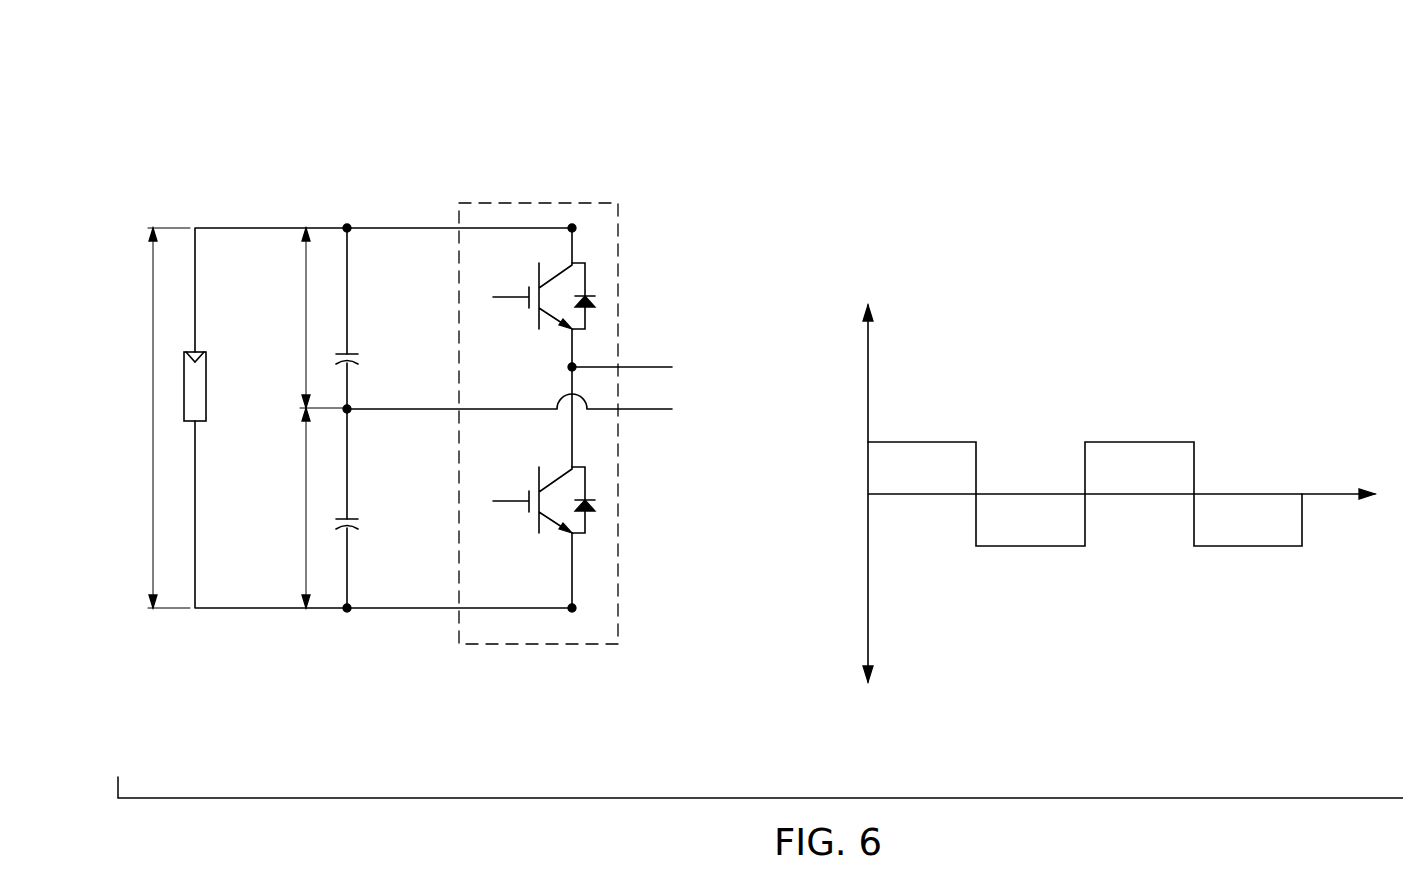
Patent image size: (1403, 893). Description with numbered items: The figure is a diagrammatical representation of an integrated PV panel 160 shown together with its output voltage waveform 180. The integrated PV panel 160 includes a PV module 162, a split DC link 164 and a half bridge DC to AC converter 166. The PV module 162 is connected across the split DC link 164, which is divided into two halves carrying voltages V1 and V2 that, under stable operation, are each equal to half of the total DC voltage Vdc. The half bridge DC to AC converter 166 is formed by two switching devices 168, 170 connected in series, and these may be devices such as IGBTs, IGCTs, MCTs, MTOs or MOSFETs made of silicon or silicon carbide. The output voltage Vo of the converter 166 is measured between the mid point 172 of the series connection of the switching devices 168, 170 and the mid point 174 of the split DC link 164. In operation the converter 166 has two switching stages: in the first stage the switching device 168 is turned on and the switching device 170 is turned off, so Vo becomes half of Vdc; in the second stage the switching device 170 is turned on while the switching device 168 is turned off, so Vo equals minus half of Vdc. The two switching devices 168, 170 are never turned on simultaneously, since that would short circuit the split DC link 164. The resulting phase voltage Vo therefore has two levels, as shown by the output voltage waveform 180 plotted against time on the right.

The integrated PV panel 160 is at (652, 97).
The PV module 162 is at (197, 352).
The split DC link 164 is at (352, 277).
The half bridge DC to AC converter 166 is at (596, 198).
The switching device 168 is at (537, 270).
The switching device 170 is at (537, 474).
The mid point of series connection of switching devices 172 is at (568, 368).
The mid point of split DC link 174 is at (350, 405).
The output voltage waveform 180 is at (1262, 659).